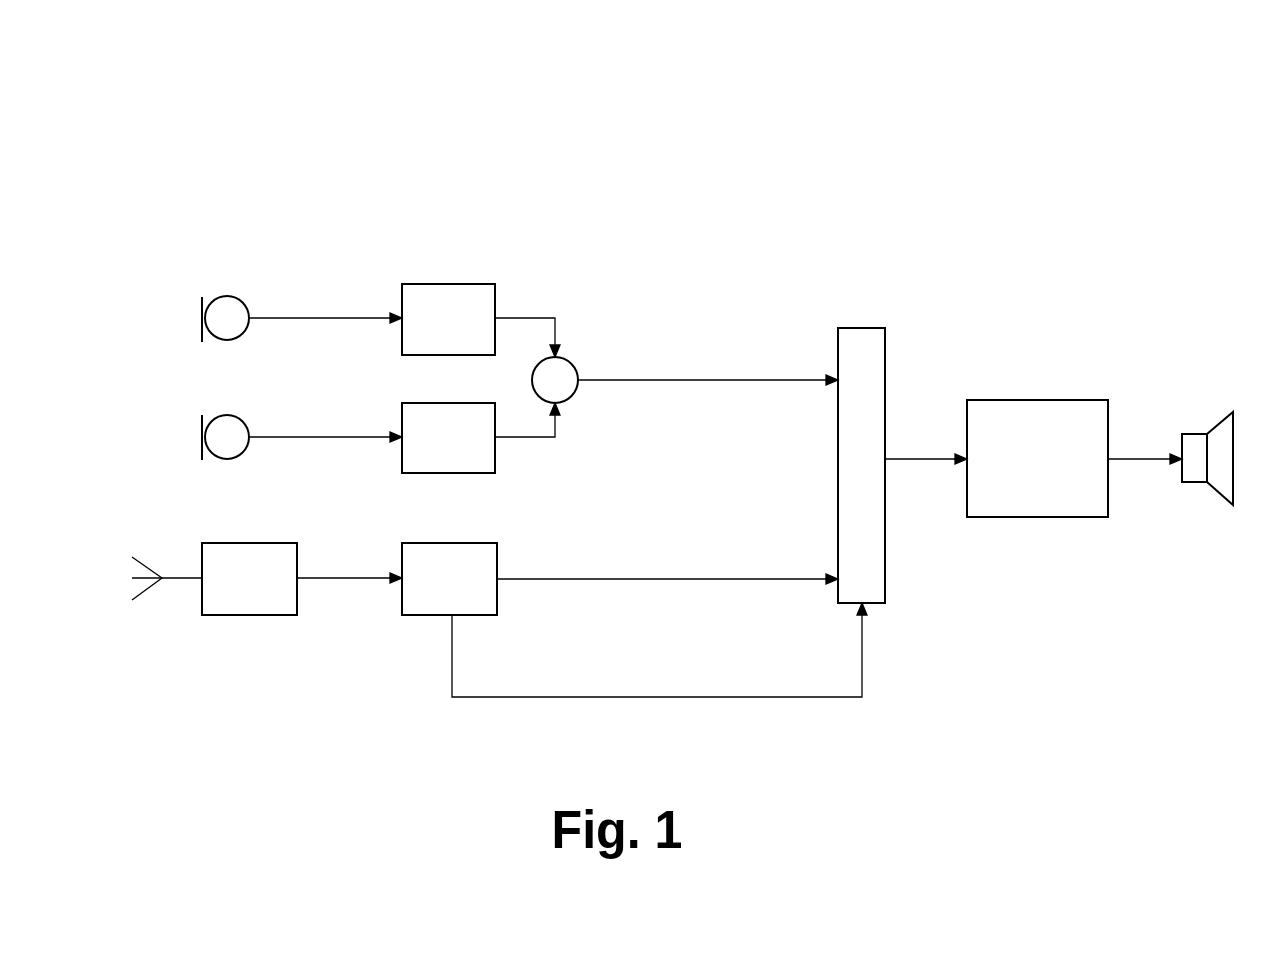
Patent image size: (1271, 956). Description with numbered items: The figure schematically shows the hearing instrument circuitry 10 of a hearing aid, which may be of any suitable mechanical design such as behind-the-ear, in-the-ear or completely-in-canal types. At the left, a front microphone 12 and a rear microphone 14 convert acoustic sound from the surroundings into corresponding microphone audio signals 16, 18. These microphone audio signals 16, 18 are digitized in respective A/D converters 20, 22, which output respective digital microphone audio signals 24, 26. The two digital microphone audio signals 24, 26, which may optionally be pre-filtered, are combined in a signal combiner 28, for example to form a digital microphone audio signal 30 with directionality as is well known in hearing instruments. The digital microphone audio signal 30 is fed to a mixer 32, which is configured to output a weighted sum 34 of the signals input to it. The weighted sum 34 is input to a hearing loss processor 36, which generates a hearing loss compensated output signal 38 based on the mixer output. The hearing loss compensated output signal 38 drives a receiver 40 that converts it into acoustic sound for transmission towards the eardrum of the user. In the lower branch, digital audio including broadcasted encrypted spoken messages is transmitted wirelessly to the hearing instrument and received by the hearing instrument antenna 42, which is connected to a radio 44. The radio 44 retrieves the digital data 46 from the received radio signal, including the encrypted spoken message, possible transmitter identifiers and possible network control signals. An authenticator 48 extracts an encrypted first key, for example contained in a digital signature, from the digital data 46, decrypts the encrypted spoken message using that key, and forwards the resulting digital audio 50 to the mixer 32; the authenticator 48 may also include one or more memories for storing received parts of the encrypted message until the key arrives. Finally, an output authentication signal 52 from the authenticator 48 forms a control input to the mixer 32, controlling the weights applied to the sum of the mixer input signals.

The hearing instrument circuitry 10 is at (611, 130).
The front microphone 12 is at (221, 306).
The rear microphone 14 is at (224, 420).
The microphone audio signal 16 is at (327, 320).
The microphone audio signal 18 is at (327, 437).
The A/D converter 20 is at (431, 334).
The A/D converter 22 is at (431, 452).
The digital microphone audio signal 24 is at (525, 318).
The digital microphone audio signal 26 is at (527, 440).
The signal combiner 28 is at (560, 372).
The digital microphone audio signal 30 is at (703, 378).
The mixer 32 is at (857, 338).
The weighted sum 34 is at (933, 458).
The hearing loss processor 36 is at (1018, 473).
The hearing loss compensated output signal 38 is at (1138, 455).
The receiver 40 is at (1200, 432).
The hearing instrument antenna 42 is at (182, 575).
The radio 44 is at (231, 592).
The digital data 46 is at (340, 575).
The authenticator 48 is at (431, 592).
The digital audio 50 is at (643, 578).
The output authentication signal 52 is at (643, 695).